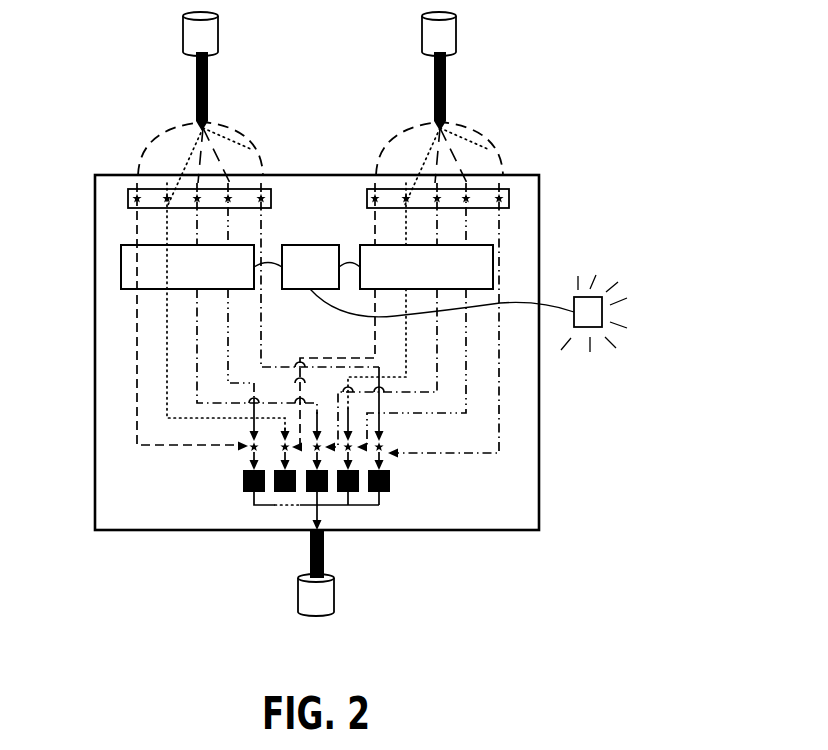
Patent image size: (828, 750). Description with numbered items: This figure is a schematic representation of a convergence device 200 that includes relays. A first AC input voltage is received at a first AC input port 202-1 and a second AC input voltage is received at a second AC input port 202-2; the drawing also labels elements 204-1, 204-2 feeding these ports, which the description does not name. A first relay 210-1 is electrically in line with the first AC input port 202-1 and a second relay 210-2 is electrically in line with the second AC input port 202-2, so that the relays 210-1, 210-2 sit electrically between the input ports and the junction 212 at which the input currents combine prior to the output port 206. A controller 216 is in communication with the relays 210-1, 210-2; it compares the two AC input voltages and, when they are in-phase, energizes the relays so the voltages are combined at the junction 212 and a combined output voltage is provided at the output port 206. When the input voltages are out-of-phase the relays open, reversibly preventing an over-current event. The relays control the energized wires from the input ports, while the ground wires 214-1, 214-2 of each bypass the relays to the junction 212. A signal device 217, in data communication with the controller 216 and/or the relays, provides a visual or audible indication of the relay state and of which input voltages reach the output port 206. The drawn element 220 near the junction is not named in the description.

The convergence device 200 is at (620, 167).
The first AC input port 202-1 is at (268, 195).
The second AC input port 202-2 is at (506, 195).
The first input optical fiber 204-1 is at (183, 35).
The second input optical fiber 204-2 is at (456, 35).
The output port 206 is at (325, 535).
The first relay 210-1 is at (187, 267).
The second relay 210-2 is at (426, 267).
The junction 212 is at (236, 458).
The first ground wire 214-1 is at (262, 316).
The second ground wire 214-2 is at (500, 231).
The controller 216 is at (307, 267).
The signal device 217 is at (602, 310).
The detectors 220 is at (391, 480).